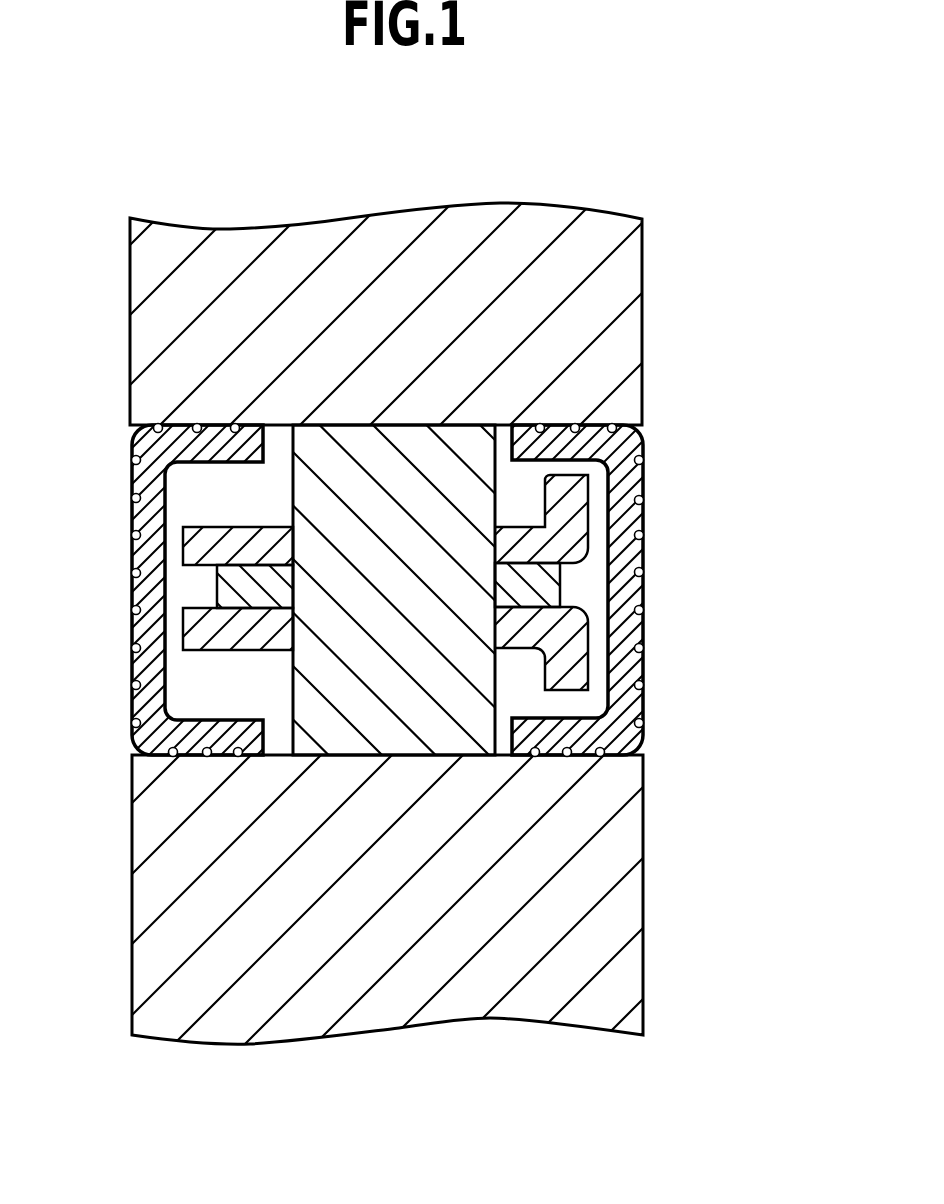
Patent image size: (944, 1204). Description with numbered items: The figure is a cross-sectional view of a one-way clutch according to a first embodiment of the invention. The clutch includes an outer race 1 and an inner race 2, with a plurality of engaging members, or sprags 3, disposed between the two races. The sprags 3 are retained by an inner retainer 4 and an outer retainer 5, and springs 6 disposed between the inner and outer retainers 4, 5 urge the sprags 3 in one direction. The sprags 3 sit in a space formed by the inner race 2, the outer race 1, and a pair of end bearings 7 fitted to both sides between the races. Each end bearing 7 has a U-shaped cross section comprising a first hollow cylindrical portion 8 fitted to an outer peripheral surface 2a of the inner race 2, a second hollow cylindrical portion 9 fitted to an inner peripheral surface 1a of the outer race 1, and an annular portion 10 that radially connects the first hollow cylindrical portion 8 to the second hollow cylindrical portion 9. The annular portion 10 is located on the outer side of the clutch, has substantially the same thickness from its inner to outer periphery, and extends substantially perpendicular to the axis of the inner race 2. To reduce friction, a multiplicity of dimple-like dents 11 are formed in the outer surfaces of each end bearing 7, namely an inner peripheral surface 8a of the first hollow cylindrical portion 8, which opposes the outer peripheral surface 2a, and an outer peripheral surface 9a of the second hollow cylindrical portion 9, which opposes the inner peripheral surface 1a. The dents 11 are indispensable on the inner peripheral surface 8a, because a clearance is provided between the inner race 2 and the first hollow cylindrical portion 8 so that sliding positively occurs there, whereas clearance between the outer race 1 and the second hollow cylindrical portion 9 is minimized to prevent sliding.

The outer race 1 is at (618, 270).
The inner peripheral surface of the outer race 1a is at (498, 457).
The inner race 2 is at (603, 950).
The outer peripheral surface of the inner race 2a is at (480, 755).
The engaging members (sprags) 3 is at (338, 463).
The inner retainer 4 is at (197, 637).
The outer retainer 5 is at (197, 542).
The springs 6 is at (233, 587).
The end bearing 7 is at (105, 451).
The first hollow cylindrical portion 8 is at (540, 752).
The inner peripheral surface of the first hollow cylindrical portion 8a is at (583, 755).
The second hollow cylindrical portion 9 is at (558, 445).
The outer peripheral surface of the second hollow cylindrical portion 9a is at (590, 422).
The annular portion 10 is at (625, 623).
The dimple-like dents 11 is at (640, 428).